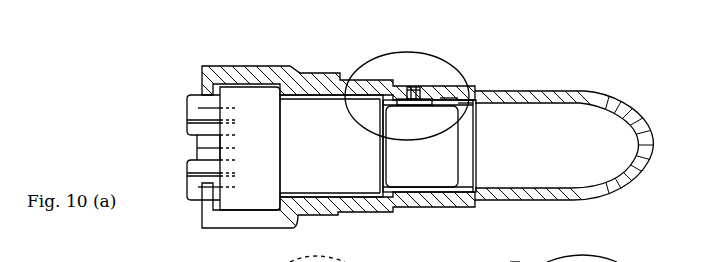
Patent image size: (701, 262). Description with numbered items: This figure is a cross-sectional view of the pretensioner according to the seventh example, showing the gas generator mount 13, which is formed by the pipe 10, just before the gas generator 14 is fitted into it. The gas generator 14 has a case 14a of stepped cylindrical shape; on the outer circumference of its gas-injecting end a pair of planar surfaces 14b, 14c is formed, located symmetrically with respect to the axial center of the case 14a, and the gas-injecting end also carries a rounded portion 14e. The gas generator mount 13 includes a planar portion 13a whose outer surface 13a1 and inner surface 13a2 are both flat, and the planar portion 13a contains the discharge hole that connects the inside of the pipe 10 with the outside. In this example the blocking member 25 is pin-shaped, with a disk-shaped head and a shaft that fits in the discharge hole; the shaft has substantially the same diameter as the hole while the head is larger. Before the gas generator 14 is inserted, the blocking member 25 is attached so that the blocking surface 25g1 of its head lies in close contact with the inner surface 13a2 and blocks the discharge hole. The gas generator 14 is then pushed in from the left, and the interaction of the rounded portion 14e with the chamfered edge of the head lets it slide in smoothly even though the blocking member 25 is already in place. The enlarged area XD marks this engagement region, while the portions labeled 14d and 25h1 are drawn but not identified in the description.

The pipe 10 is at (618, 101).
The gas generator mount 13 is at (273, 63).
The planar portion 13a is at (400, 87).
The outer surface 13a1 is at (436, 87).
The inner surface 13a2 is at (466, 104).
The gas generator 14 is at (248, 200).
The case 14a is at (345, 198).
The planar surface 14b is at (455, 98).
The planar surface 14c is at (425, 186).
The inner sleeve of connector 14d is at (458, 152).
The rounded portion 14e is at (462, 99).
The blocking member 25 is at (407, 100).
The blocking surface 25g1 is at (515, 261).
The hole of inner member 25h1 is at (590, 261).
The detail region XD is at (365, 62).